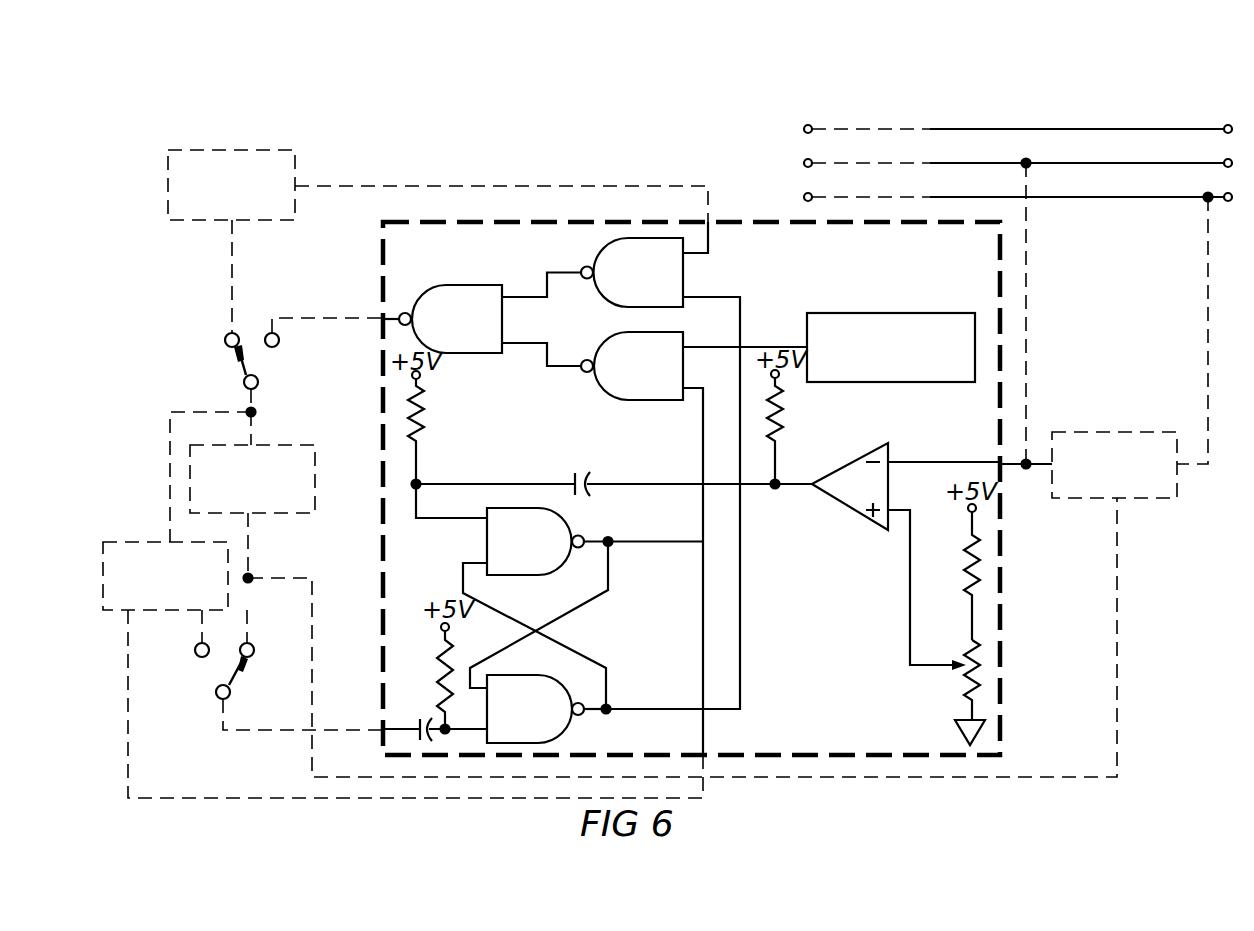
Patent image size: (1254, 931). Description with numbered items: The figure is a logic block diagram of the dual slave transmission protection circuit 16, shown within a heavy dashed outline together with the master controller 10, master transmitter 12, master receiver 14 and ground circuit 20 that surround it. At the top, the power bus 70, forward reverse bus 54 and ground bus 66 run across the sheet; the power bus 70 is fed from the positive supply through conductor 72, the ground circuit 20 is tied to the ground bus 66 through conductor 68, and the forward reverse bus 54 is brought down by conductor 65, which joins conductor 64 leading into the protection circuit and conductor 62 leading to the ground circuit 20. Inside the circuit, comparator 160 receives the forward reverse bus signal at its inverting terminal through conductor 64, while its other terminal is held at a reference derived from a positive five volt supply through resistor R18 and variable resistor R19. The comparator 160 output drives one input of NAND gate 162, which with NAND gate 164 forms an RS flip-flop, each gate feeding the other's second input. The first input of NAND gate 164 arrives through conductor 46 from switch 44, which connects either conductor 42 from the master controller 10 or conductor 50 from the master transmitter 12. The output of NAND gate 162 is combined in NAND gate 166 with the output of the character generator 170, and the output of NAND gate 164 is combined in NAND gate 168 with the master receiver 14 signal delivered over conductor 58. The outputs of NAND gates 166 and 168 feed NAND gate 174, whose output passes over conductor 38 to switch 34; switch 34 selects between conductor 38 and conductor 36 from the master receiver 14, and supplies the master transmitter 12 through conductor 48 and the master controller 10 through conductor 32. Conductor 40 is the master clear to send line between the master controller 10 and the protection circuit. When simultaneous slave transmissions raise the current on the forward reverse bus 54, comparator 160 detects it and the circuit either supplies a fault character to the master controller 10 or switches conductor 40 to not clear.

The master controller 10 is at (131, 542).
The master transmitter 12 is at (296, 445).
The master receiver 14 is at (196, 150).
The dual slave transmission protection circuit 16 is at (1002, 665).
The ground circuit 20 is at (1150, 432).
The conductor 32 is at (186, 412).
The switch 34 is at (245, 373).
The conductor 36 is at (230, 302).
The conductor 38 is at (318, 318).
The conductor 40 is at (128, 748).
The conductor 42 is at (203, 642).
The switch 44 is at (230, 686).
The conductor 46 is at (282, 732).
The conductor 48 is at (253, 440).
The conductor 50 is at (250, 623).
The forward reverse bus 54 is at (991, 163).
The conductor 58 is at (456, 186).
The conductor 62 is at (1036, 462).
The conductor 64 is at (1007, 465).
The conductor 65 is at (1027, 312).
The ground bus 66 is at (991, 197).
The conductor 68 is at (1208, 346).
The power bus 70 is at (991, 129).
The conductor 72 is at (738, 346).
The comparator 160 is at (868, 455).
The NAND gate 162 is at (511, 577).
The NAND gate 164 is at (508, 675).
The NAND gate 166 is at (616, 349).
The NAND gate 168 is at (612, 258).
The character generator 170 is at (843, 313).
The NAND gate 174 is at (473, 285).
The resistor R18 is at (952, 576).
The variable resistor R19 is at (949, 680).